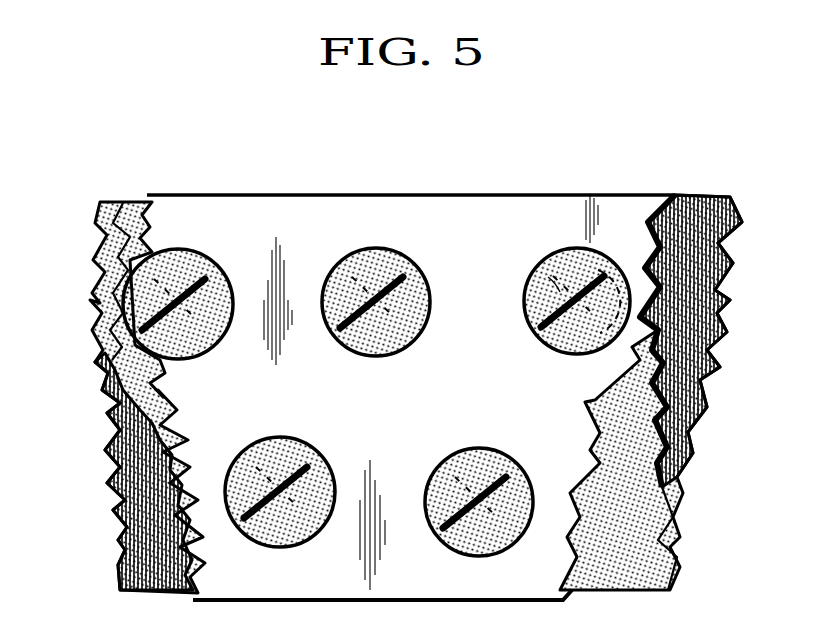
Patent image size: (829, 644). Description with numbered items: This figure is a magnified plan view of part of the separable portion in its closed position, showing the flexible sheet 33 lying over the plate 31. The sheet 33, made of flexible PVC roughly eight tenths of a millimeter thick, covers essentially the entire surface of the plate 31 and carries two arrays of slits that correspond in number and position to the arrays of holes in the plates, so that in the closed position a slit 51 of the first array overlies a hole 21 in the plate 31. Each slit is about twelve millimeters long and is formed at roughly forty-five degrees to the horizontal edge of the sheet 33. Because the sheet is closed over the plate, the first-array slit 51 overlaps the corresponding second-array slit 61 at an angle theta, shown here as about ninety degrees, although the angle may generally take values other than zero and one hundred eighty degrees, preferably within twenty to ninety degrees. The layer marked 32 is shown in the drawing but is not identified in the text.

The hole 21 is at (575, 357).
The plate 31 is at (218, 226).
The hatched conductive layer 32 is at (123, 528).
The flexible sheet 33 is at (93, 312).
The slit 51 is at (557, 313).
The slit 61 is at (530, 275).